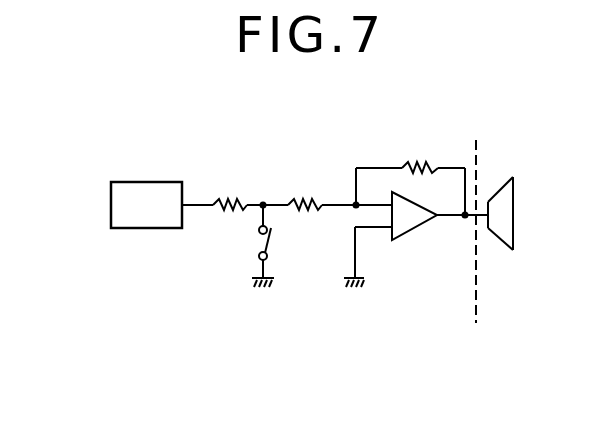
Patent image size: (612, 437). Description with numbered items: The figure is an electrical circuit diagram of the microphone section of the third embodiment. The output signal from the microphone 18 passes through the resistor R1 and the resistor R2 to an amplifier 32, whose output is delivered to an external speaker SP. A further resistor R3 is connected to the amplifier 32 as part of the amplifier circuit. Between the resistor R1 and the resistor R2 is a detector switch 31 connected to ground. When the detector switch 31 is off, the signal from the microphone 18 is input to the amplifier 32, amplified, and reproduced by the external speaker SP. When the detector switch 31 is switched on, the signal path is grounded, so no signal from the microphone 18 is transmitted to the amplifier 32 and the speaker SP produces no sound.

The microphone 18 is at (145, 228).
The detector switch 31 is at (239, 246).
The amplifier 32 is at (417, 227).
The resistor R1 is at (230, 195).
The resistor R2 is at (305, 195).
The resistor R3 is at (420, 158).
The external speaker SP is at (505, 237).